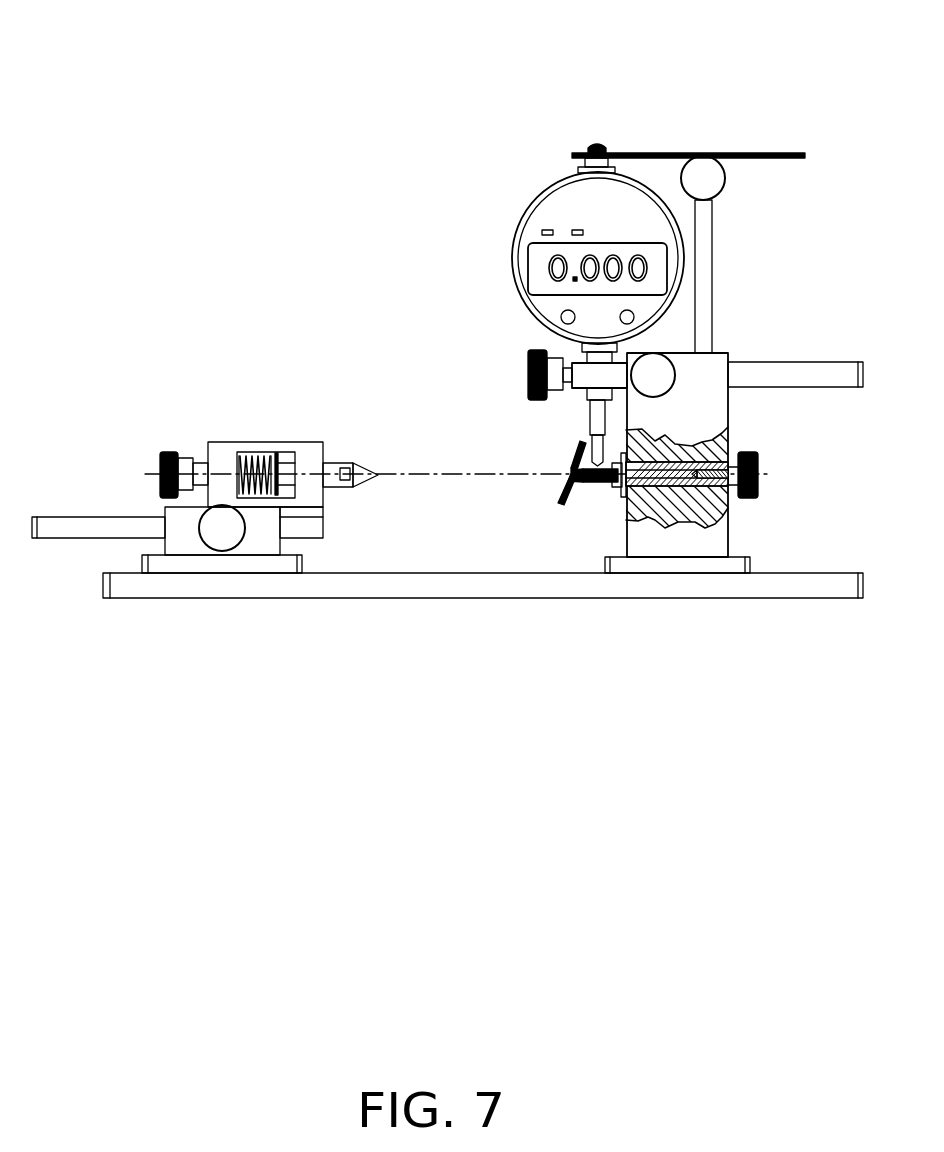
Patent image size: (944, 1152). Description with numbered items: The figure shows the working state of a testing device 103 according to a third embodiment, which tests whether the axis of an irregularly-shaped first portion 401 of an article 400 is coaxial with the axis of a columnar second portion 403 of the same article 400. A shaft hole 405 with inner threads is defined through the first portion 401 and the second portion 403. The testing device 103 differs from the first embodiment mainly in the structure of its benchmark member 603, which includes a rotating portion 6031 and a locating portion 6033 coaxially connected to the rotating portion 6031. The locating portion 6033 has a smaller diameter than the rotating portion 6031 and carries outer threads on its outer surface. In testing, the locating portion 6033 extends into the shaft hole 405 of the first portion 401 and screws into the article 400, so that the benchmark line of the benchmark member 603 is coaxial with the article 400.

The testing device 103 is at (433, 40).
The article 400 is at (470, 490).
The first portion 401 is at (565, 487).
The second portion 403 is at (587, 490).
The shaft hole 405 is at (571, 466).
The benchmark member 603 is at (700, 648).
The rotating portion 6031 is at (602, 481).
The locating portion 6033 is at (660, 482).